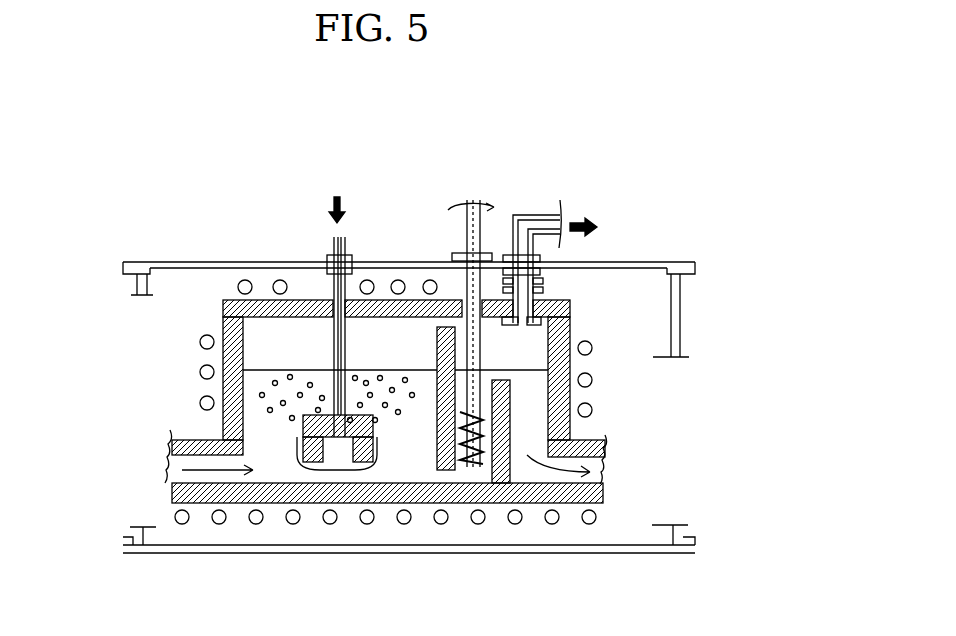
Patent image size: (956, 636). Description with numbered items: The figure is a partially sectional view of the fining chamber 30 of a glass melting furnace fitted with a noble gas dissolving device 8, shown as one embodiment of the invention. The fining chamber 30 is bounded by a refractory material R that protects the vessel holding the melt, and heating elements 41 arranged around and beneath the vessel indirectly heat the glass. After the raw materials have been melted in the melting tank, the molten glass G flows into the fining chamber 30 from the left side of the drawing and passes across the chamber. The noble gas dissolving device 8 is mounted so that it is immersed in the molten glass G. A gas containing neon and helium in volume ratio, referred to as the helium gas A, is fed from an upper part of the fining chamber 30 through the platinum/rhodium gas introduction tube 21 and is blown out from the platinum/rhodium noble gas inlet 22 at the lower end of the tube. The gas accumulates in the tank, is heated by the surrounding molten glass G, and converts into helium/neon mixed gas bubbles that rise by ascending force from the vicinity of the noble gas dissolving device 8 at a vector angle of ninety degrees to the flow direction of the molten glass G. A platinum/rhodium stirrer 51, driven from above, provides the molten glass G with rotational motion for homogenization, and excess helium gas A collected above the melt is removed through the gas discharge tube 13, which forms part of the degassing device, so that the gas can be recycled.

The gas introduction tube 21 is at (368, 224).
The helium gas A is at (333, 214).
The stirrer 51 is at (465, 232).
The gas discharge tube 13 is at (517, 217).
The fining chamber 30 is at (171, 330).
The refractory material R is at (227, 350).
The noble gas dissolving device 8 is at (270, 426).
The noble gas inlet 22 is at (337, 440).
The molten glass G is at (268, 465).
The heating element 41 is at (405, 522).